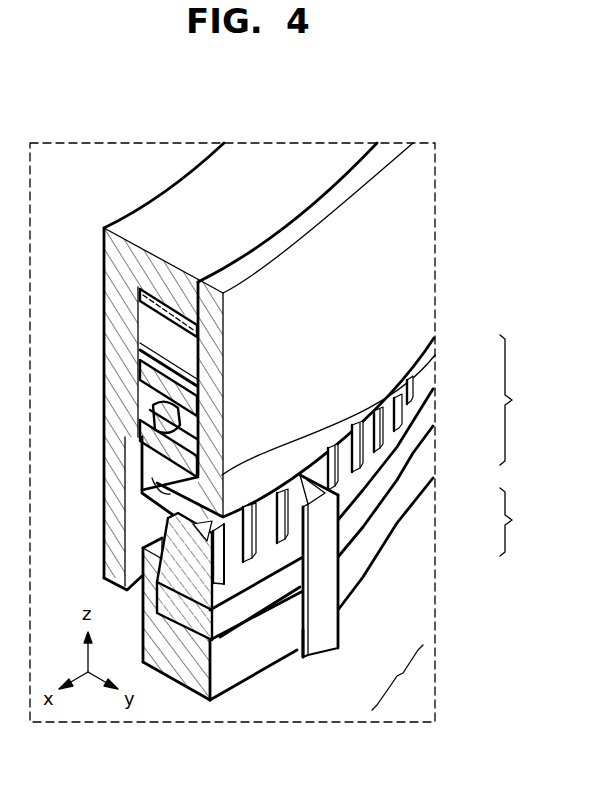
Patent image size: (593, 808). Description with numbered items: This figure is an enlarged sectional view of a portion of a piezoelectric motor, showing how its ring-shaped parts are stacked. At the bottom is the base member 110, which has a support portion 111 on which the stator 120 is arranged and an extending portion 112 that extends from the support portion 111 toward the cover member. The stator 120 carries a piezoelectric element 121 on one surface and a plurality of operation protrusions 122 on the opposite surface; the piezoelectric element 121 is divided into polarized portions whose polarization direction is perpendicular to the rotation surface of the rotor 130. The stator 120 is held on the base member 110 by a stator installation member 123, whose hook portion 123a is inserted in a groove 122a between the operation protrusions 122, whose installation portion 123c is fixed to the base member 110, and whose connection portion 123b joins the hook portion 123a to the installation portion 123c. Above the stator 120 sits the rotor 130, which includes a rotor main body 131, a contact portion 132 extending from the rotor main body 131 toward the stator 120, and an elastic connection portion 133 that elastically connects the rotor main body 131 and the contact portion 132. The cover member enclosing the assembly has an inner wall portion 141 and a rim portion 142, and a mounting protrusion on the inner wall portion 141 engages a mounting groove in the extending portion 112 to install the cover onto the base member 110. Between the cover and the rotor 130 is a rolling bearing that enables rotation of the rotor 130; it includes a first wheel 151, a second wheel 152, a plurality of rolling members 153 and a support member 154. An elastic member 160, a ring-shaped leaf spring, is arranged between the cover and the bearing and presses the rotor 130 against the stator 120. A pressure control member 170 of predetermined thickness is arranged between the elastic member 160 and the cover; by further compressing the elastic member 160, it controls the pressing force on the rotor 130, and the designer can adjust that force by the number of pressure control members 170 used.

The base member 110 is at (221, 652).
The support portion 111 is at (178, 675).
The extending portion 112 is at (150, 566).
The stator 120 is at (376, 599).
The piezoelectric element 121 is at (358, 527).
The operation protrusions 122 is at (348, 478).
The groove 122a is at (197, 543).
The stator installation member 123 is at (365, 592).
The hook portion 123a is at (322, 495).
The connection portion 123b is at (320, 627).
The installation portion 123c is at (303, 660).
The rotor 130 is at (356, 446).
The rotor main body 131 is at (217, 368).
The contact portion 132 is at (355, 462).
The elastic connection portion 133 is at (332, 428).
The inner wall portion 141 is at (110, 483).
The rim portion 142 is at (153, 213).
The first wheel 151 is at (148, 440).
The second wheel 152 is at (145, 381).
The rolling members 153 is at (163, 420).
The support member 154 is at (150, 405).
The elastic member 160 is at (140, 352).
The pressure control member 170 is at (140, 293).